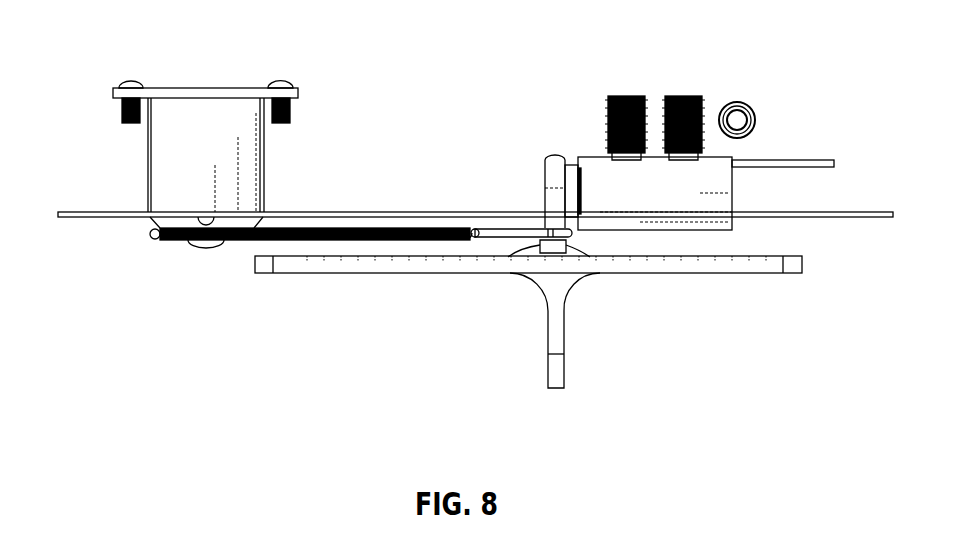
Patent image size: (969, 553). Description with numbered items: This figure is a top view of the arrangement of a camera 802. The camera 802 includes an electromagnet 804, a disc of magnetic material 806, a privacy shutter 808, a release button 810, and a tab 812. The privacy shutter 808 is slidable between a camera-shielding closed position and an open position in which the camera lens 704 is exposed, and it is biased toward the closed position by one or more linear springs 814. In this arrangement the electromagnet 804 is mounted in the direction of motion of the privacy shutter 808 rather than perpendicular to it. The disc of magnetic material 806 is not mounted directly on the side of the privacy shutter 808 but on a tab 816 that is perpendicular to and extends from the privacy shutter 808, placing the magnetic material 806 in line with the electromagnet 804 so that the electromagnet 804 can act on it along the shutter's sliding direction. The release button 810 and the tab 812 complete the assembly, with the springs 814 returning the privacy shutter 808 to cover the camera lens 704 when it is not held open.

The camera 802 is at (104, 40).
The camera lens 704 is at (200, 246).
The linear springs 814 is at (316, 228).
The tab 816 is at (545, 175).
The disc of magnetic material 806 is at (566, 165).
The electromagnet 804 is at (733, 175).
The release button 810 is at (737, 102).
The privacy shutter 808 is at (290, 275).
The tab 812 is at (548, 327).